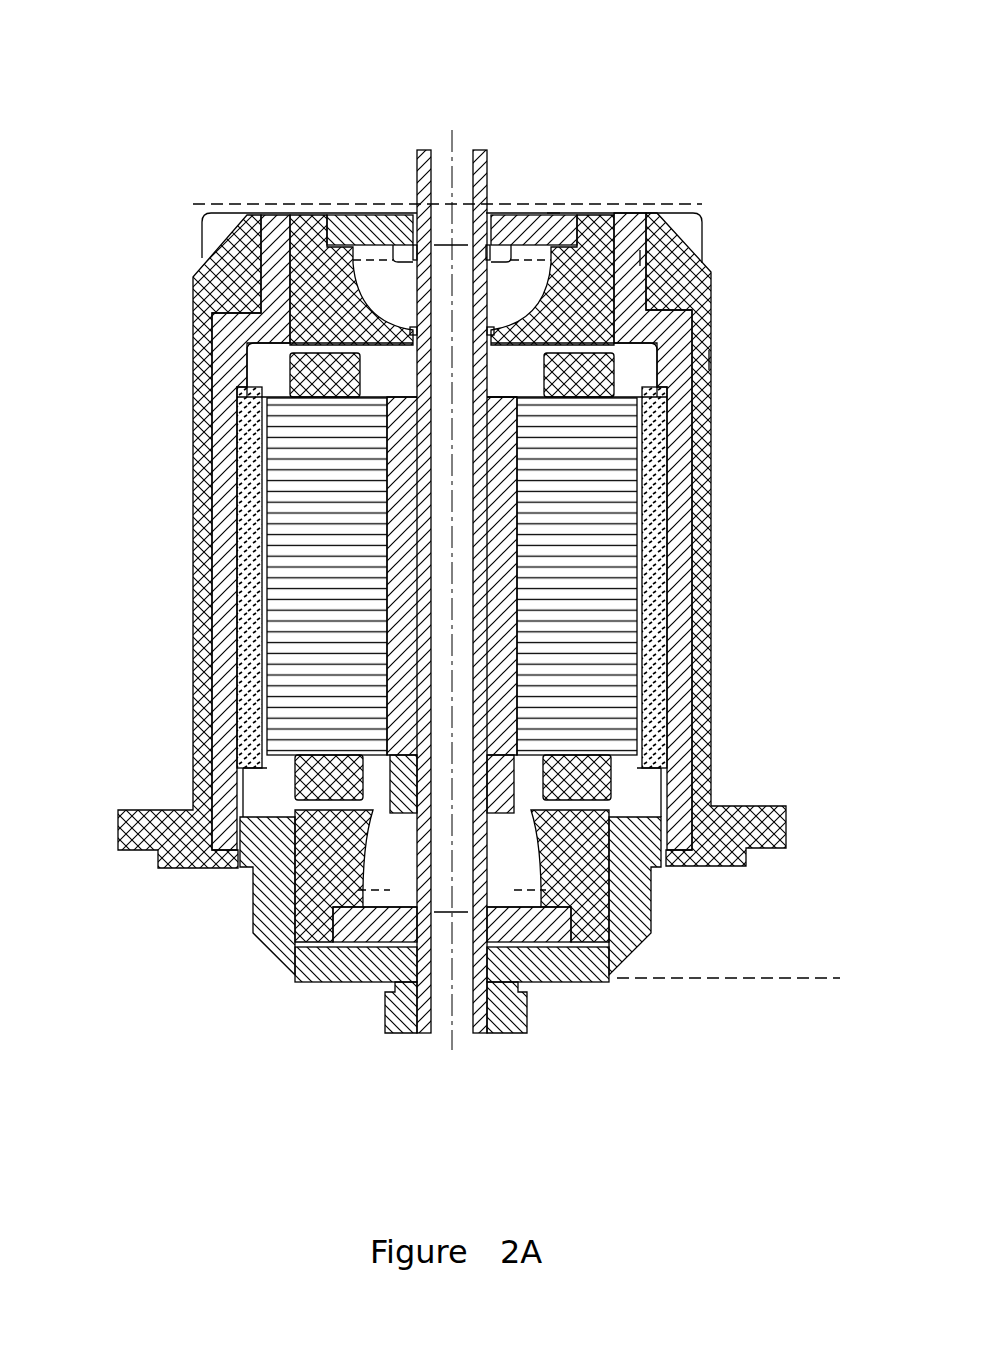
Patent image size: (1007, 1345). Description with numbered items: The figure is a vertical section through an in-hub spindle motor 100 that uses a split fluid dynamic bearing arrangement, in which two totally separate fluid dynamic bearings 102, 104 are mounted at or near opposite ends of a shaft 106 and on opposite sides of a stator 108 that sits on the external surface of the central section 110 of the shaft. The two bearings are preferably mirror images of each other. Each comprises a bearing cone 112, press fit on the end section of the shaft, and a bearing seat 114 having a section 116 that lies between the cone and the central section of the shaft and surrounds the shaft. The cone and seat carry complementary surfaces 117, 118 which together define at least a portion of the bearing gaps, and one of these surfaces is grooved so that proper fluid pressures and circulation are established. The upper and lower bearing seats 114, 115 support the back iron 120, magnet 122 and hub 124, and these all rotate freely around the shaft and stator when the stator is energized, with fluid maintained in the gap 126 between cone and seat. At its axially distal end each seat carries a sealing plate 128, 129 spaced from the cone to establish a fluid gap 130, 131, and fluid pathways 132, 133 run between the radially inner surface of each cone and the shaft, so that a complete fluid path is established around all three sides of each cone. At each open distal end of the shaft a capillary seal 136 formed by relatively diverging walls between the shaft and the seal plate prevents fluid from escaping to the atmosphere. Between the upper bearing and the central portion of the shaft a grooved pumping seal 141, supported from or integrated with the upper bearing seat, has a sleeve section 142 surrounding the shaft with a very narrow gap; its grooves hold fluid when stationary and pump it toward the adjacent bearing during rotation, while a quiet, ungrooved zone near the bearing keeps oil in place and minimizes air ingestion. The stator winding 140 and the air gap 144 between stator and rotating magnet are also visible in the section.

The motor 100 is at (247, 185).
The fluid dynamic bearing 102 is at (388, 263).
The fluid dynamic bearing 104 is at (393, 901).
The shaft 106 is at (488, 152).
The stator 108 is at (582, 487).
The central section of the shaft 110 is at (520, 550).
The bearing cone 112 is at (400, 1036).
The bearing seat 114 is at (300, 965).
The bearing seat 115 is at (303, 232).
The section of the bearing seat 116 is at (613, 758).
The complementary surface 117 is at (342, 955).
The complementary surface 118 is at (382, 865).
The back iron 120 is at (640, 258).
The magnet 122 is at (655, 418).
The hub 124 is at (709, 360).
The gap 126 is at (367, 293).
The sealing plate 128 is at (568, 943).
The sealing plate 129 is at (547, 213).
The fluid gap 130 is at (530, 953).
The fluid gap 131 is at (393, 243).
The fluid pathway 132 is at (492, 992).
The fluid pathway 133 is at (514, 286).
The capillary seal 136 is at (512, 185).
The winding 140 is at (387, 458).
The grooved pumping seal 141 is at (610, 336).
The sleeve section 142 is at (603, 802).
The air gap 144 is at (513, 398).